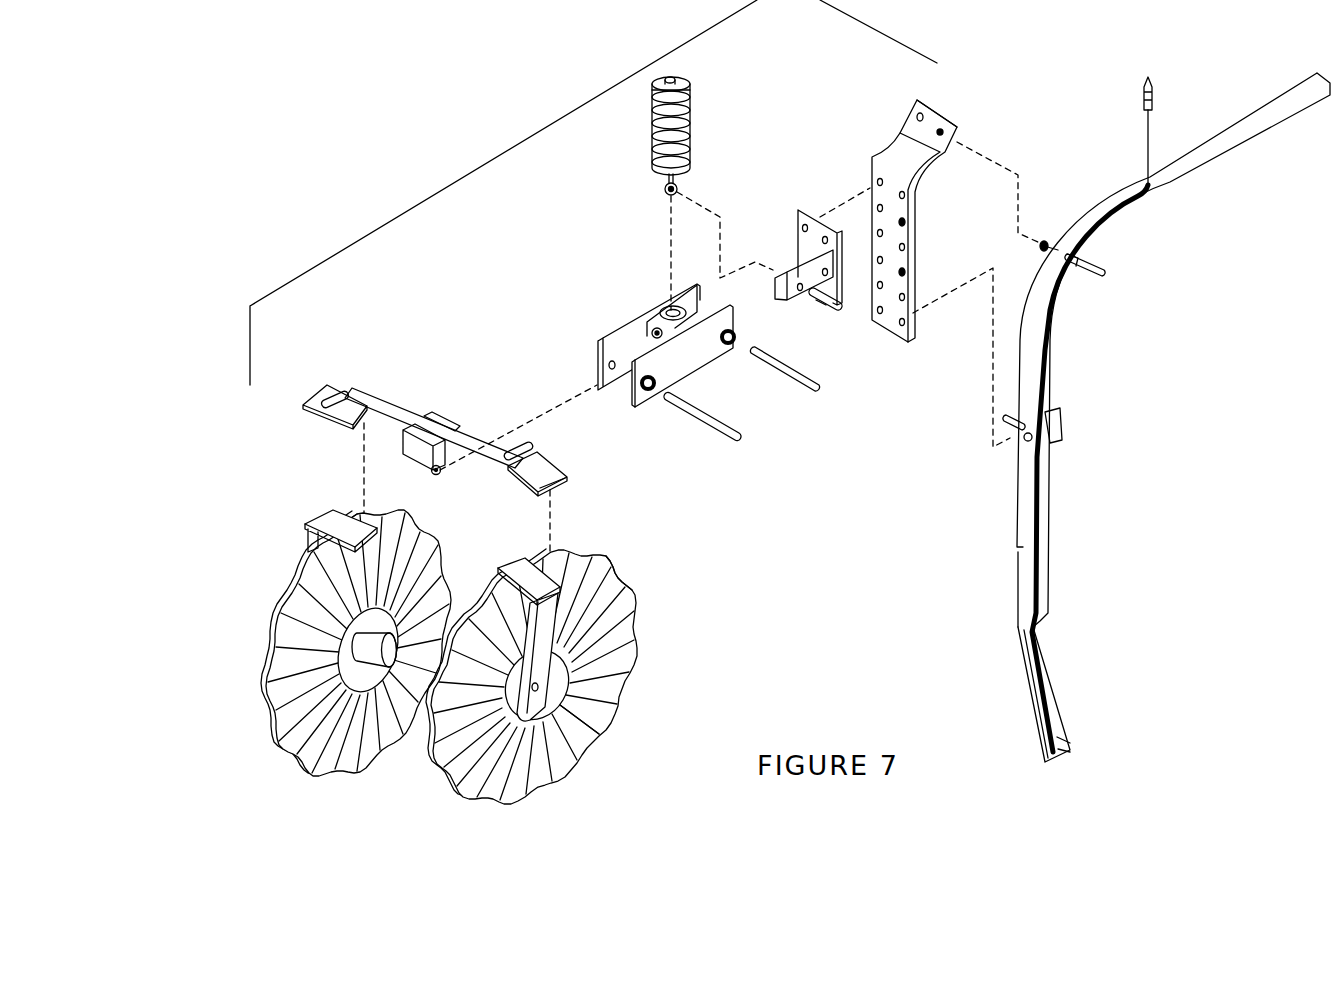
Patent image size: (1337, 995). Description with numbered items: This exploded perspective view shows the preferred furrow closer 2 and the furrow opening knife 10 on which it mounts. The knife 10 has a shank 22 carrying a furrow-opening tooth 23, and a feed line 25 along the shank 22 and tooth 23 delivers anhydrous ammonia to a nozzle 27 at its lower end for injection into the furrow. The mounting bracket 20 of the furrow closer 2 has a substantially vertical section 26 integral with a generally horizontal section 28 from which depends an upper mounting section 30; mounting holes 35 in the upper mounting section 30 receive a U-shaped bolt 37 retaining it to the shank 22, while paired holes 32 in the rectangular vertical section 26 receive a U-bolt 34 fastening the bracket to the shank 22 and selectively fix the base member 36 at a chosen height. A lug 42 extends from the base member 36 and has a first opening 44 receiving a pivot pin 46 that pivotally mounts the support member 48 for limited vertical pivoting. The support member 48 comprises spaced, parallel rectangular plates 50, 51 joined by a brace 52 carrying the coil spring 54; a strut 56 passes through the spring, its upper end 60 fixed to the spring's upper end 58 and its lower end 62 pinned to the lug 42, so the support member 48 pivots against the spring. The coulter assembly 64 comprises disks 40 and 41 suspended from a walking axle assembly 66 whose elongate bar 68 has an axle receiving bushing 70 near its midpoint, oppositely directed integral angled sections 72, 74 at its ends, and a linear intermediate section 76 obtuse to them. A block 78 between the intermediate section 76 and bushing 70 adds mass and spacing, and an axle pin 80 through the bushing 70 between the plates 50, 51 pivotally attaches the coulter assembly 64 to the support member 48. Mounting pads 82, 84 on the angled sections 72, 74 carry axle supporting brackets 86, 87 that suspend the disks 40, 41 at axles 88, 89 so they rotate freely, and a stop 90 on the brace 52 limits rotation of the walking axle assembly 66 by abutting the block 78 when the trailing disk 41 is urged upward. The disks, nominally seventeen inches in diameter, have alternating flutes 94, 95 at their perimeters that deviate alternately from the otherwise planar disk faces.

The furrow closer 2 is at (523, 143).
The furrow opening knife 10 is at (1166, 417).
The mounting bracket 20 is at (870, 167).
The shank 22 is at (1060, 328).
The tooth 23 is at (1058, 713).
The feed line 25 is at (1037, 543).
The vertical section 26 is at (910, 196).
The nozzle 27 is at (1067, 747).
The horizontal section 28 is at (922, 160).
The upper mounting section 30 is at (925, 128).
The paired holes 32 is at (905, 272).
The U-bolt 34 is at (1057, 420).
The mounting holes 35 is at (942, 131).
The base member 36 is at (797, 225).
The U-shaped bolt 37 is at (1105, 267).
The disk 40 is at (627, 690).
The disk 41 is at (283, 738).
The lug 42 is at (793, 270).
The first opening 44 is at (825, 305).
The pivot pin 46 is at (780, 377).
The support member 48 is at (607, 330).
The rectangular plate 50 is at (700, 360).
The rectangular plate 51 is at (595, 355).
The brace 52 is at (653, 317).
The coil spring 54 is at (653, 123).
The strut 56 is at (685, 178).
The upper end of coil spring 58 is at (682, 88).
The upper end of strut 60 is at (677, 78).
The lower end of strut 62 is at (663, 193).
The coulter assembly 64 is at (617, 543).
The walking axle assembly 66 is at (558, 462).
The elongate bar 68 is at (400, 410).
The axle receiving bushing 70 is at (410, 460).
The angled section 72 is at (542, 453).
The angled section 74 is at (340, 398).
The intermediate section 76 is at (460, 442).
The block 78 is at (413, 443).
The axle pin 80 is at (703, 423).
The mounting pad 82 is at (552, 480).
The mounting pad 84 is at (320, 392).
The axle supporting bracket 86 is at (520, 567).
The axle supporting bracket 87 is at (332, 522).
The axle 88 is at (625, 643).
The axle 89 is at (425, 560).
The stop 90 is at (658, 312).
The flute 94 is at (603, 713).
The flute 95 is at (547, 682).